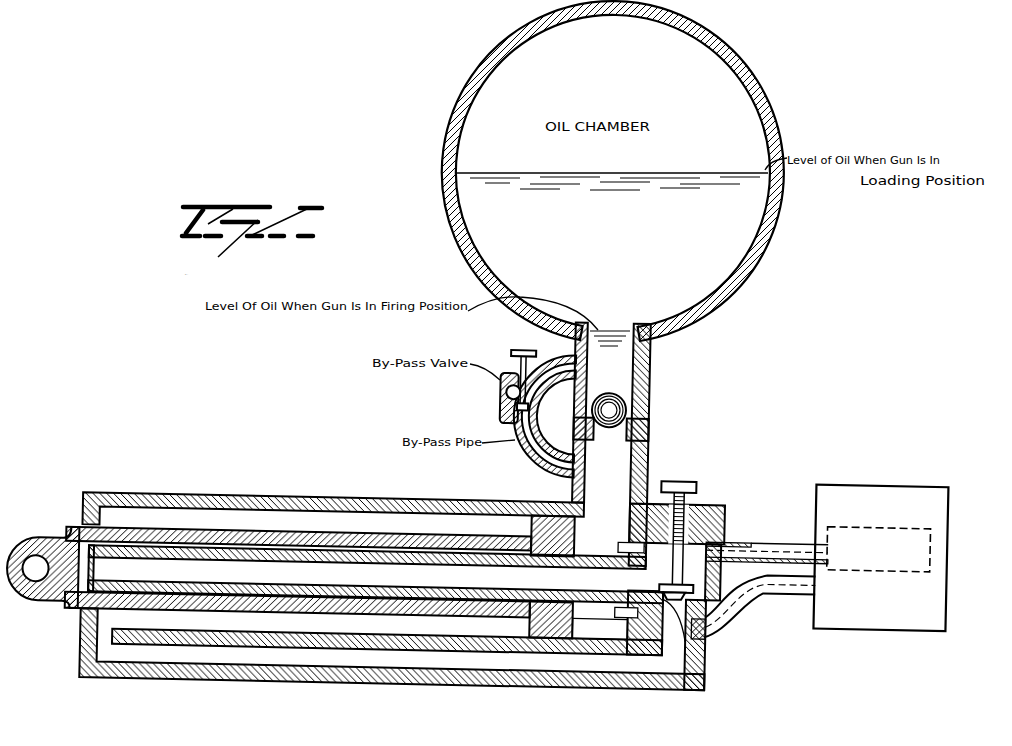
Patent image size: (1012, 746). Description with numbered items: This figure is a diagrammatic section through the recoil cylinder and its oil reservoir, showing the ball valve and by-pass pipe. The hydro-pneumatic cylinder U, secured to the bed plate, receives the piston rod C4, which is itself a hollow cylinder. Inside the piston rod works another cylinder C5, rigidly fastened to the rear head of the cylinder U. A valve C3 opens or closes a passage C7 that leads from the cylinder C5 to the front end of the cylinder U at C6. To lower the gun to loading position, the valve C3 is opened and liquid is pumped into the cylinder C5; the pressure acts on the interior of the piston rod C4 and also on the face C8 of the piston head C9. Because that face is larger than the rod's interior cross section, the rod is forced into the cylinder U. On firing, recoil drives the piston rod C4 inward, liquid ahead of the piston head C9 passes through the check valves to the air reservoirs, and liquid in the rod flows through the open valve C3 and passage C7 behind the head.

The hydro-pneumatic cylinder U is at (515, 503).
The valve C3 is at (715, 633).
The piston rod C4 is at (73, 548).
The cylinder C5 is at (376, 574).
The front end of the cylinder C6 is at (82, 676).
The passage C7 is at (332, 666).
The face of the piston head C8 is at (527, 634).
The piston head C9 is at (563, 628).